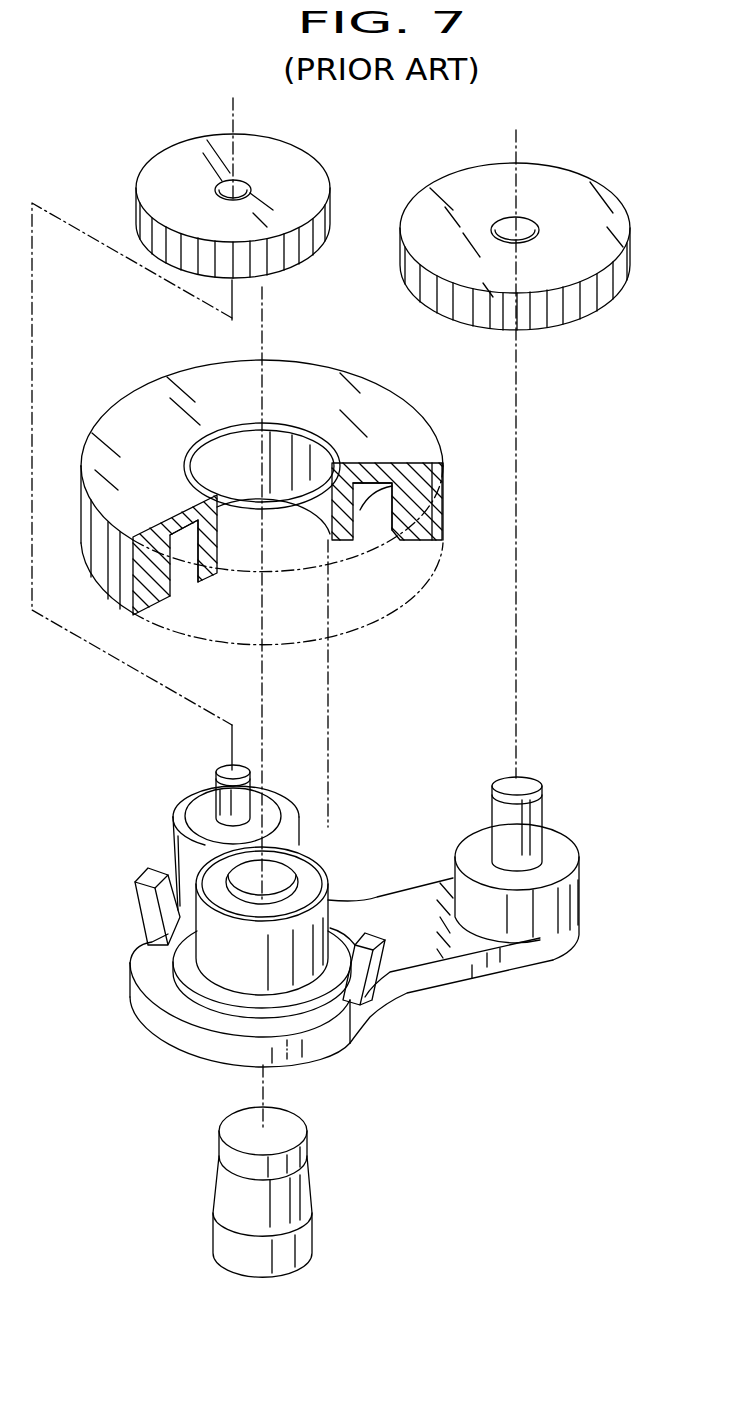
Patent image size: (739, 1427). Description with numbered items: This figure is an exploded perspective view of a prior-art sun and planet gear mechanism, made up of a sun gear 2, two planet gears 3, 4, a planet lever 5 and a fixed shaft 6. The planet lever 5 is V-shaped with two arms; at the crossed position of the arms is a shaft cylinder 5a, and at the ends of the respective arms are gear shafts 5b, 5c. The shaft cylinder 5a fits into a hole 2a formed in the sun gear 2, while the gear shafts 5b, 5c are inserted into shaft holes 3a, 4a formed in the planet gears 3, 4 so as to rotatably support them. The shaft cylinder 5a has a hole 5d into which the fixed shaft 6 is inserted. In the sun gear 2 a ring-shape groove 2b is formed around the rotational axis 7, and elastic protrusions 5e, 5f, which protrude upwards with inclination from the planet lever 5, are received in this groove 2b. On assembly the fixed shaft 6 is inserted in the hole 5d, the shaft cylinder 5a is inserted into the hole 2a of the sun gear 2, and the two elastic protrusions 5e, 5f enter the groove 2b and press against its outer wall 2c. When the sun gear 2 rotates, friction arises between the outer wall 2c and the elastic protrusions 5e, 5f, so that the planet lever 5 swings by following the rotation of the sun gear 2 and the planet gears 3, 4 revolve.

The sun gear 2 is at (262, 477).
The hole 2a is at (288, 453).
The ring-shape groove 2b is at (360, 512).
The outer wall 2c is at (378, 500).
The planet gear 3 is at (243, 188).
The shaft hole 3a is at (224, 190).
The planet gear 4 is at (518, 217).
The shaft hole 4a is at (503, 230).
The planet lever 5 is at (342, 893).
The shaft cylinder 5a is at (243, 943).
The gear shaft 5b is at (233, 768).
The gear shaft 5c is at (521, 783).
The hole 5d is at (281, 872).
The elastic protrusion 5e is at (147, 876).
The elastic protrusion 5f is at (367, 938).
The fixed shaft 6 is at (337, 1191).
The rotational axis 7 is at (263, 687).